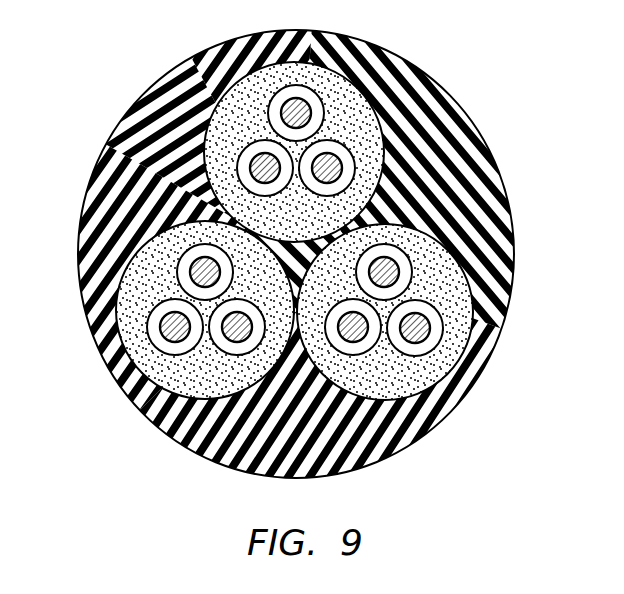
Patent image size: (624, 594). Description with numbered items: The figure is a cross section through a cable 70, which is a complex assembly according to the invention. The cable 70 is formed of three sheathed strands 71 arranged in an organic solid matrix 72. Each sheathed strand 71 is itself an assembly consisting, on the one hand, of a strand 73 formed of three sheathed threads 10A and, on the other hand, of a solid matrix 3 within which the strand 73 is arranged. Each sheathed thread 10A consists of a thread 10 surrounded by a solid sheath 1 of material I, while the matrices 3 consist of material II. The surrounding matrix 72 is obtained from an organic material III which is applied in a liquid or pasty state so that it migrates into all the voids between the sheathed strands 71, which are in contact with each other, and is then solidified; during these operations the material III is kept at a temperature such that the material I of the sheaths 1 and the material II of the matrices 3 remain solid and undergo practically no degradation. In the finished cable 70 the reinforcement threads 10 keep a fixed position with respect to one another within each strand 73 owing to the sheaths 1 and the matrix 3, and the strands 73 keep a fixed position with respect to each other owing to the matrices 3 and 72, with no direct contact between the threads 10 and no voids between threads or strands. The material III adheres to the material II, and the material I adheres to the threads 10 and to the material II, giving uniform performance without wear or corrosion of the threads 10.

The solid sheath 1 is at (356, 197).
The thread 10 is at (347, 148).
The sheathed thread 10A is at (453, 390).
The solid matrix 3 is at (440, 427).
The cable 70 is at (497, 117).
The sheathed strand 71 is at (307, 231).
The organic solid matrix 72 is at (473, 313).
The strand 73 is at (277, 242).
The material I is at (350, 160).
The material II is at (170, 380).
The material III is at (377, 453).